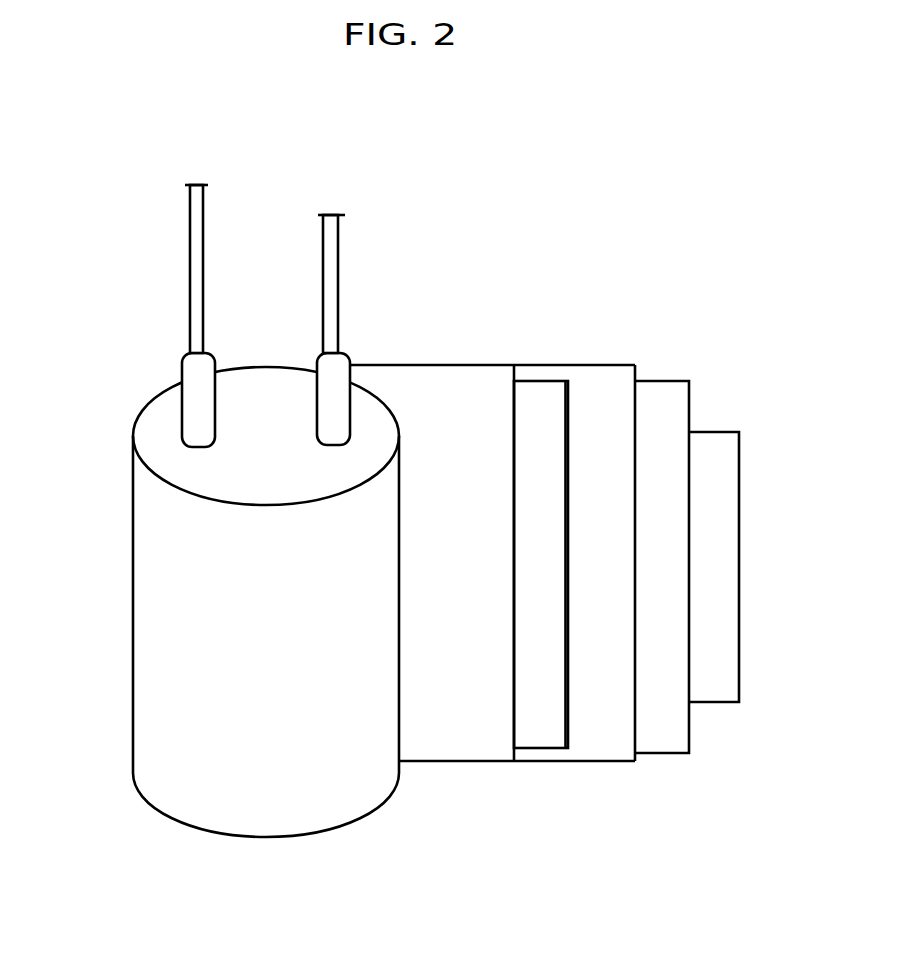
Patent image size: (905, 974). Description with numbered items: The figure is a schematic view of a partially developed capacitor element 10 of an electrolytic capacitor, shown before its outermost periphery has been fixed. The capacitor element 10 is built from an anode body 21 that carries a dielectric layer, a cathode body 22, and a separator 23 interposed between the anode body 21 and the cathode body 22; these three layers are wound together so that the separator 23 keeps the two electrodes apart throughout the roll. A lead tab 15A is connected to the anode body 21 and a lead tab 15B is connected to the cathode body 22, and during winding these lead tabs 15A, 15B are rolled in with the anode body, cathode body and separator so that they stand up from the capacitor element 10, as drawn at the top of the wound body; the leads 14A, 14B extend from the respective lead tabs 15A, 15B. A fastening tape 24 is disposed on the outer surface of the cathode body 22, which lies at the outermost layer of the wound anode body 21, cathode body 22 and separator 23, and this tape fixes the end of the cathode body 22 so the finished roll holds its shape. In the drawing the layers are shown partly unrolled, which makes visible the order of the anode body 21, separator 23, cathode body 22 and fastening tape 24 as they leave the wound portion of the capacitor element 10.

The capacitor element 10 is at (507, 193).
The lead wire 14A is at (196, 237).
The lead wire 14B is at (335, 226).
The lead tab 15A is at (195, 380).
The lead tab 15B is at (337, 381).
The anode body 21 is at (555, 722).
The cathode body 22 is at (665, 740).
The separator 23 is at (472, 722).
The fastening tape 24 is at (714, 685).